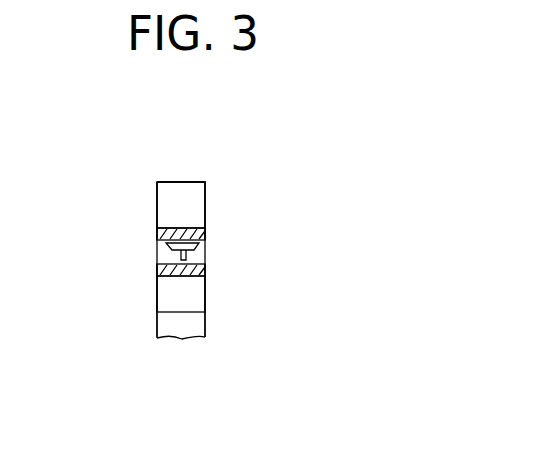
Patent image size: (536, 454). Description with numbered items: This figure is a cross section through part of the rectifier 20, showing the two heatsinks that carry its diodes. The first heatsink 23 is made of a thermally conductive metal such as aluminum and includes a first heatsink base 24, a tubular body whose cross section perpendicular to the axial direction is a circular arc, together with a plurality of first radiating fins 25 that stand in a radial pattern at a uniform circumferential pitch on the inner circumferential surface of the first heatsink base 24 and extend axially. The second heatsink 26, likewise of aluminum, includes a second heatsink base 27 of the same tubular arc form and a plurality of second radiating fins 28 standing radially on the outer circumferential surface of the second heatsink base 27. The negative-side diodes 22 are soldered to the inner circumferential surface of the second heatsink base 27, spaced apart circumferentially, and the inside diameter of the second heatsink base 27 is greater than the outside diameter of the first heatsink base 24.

The rectifier 20 is at (91, 131).
The negative-side diodes 22 is at (200, 246).
The first heatsink 23 is at (206, 285).
The first heatsink base 24 is at (158, 268).
The first radiating fins 25 is at (160, 293).
The second heatsink 26 is at (206, 213).
The second heatsink base 27 is at (164, 237).
The second radiating fins 28 is at (164, 199).